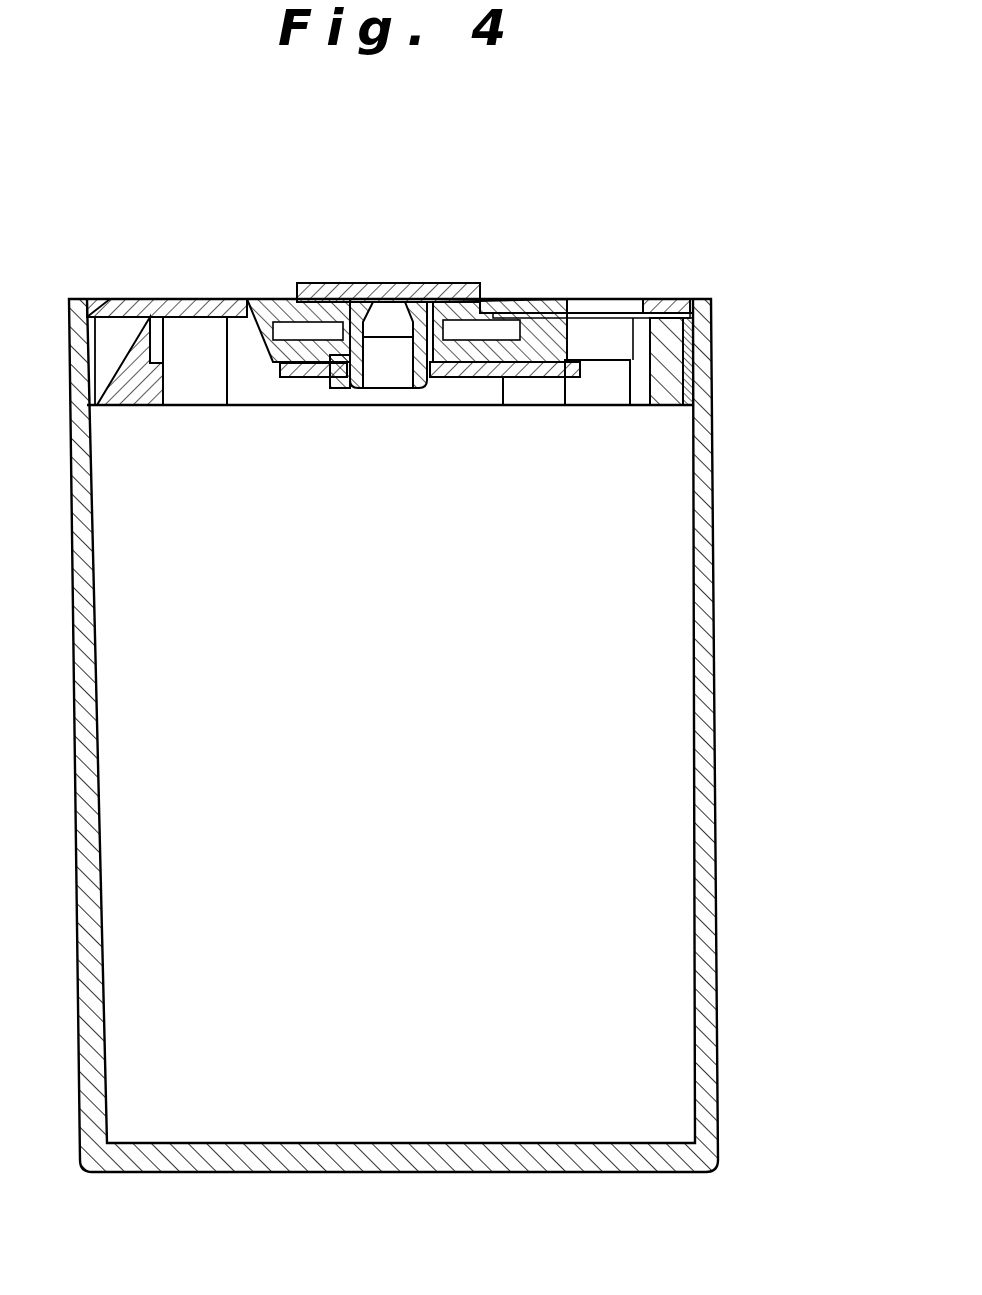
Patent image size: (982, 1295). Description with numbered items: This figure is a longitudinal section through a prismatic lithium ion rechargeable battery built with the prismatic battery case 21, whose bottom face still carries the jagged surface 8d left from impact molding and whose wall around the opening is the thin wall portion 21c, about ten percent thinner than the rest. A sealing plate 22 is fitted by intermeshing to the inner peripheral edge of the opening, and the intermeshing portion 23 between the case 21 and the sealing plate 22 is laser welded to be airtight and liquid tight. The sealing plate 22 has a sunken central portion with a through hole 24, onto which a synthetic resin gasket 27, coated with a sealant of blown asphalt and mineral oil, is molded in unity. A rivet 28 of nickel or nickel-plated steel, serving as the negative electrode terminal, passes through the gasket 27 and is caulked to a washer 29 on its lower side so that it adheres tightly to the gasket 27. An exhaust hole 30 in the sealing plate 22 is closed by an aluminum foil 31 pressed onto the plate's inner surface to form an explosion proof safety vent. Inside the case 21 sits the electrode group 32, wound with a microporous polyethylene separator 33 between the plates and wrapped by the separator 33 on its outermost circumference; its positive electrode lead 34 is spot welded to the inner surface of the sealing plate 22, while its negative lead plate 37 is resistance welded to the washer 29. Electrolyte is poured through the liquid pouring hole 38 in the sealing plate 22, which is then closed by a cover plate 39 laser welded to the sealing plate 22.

The prismatic battery case 21 is at (712, 597).
The thin wall portion 21c is at (712, 352).
The sealing plate 22 is at (553, 292).
The intermeshing portion 23 is at (693, 297).
The through hole 24 is at (375, 370).
The gasket 27 is at (320, 297).
The rivet 28 is at (433, 283).
The washer 29 is at (477, 378).
The exhaust hole 30 is at (617, 297).
The aluminum foil 31 is at (603, 318).
The electrode group 32 is at (597, 777).
The separator 33 is at (580, 388).
The positive electrode lead 34 is at (195, 373).
The negative lead plate 37 is at (540, 388).
The liquid pouring hole 38 is at (122, 298).
The cover plate 39 is at (135, 300).
The jagged surface 8d is at (507, 1143).